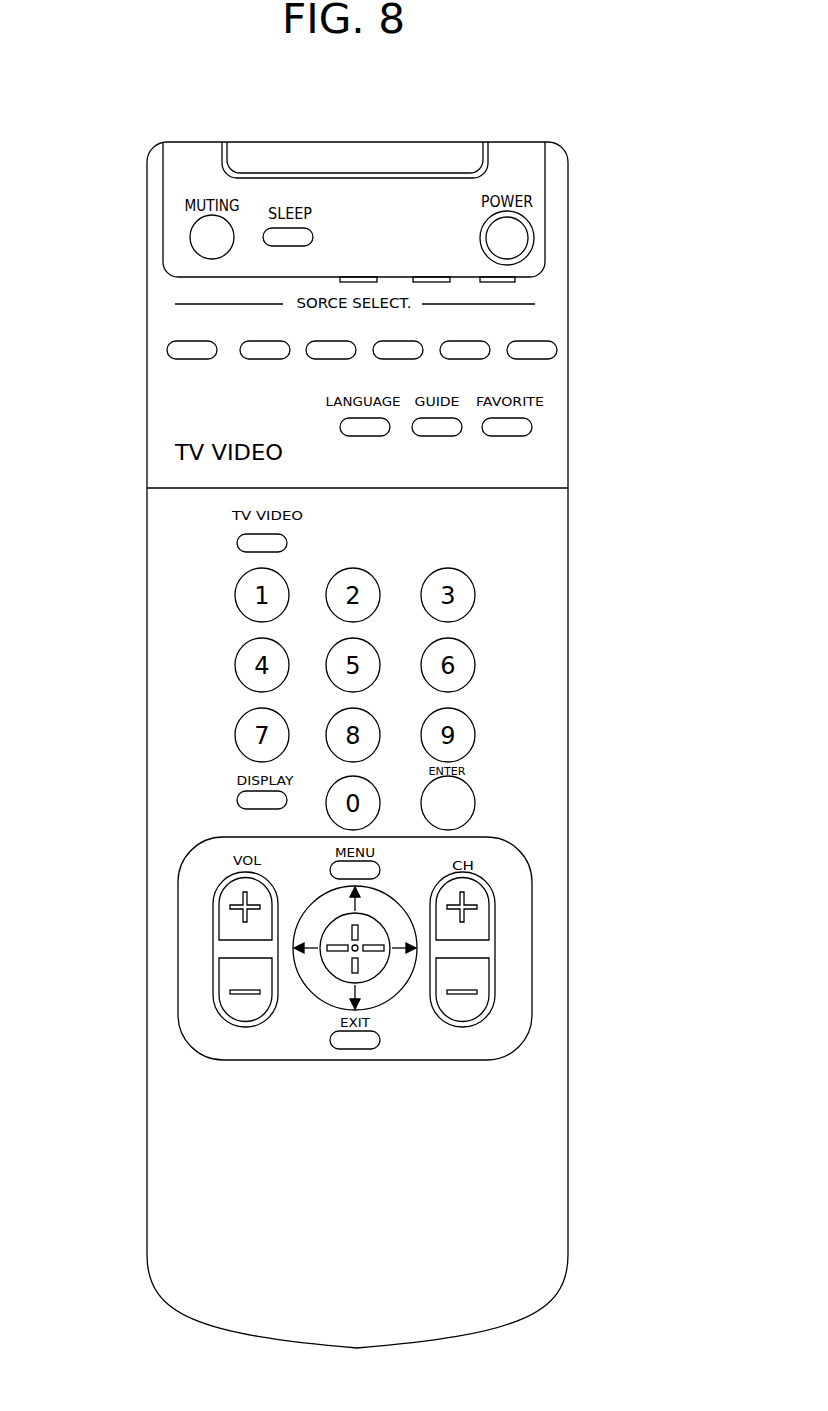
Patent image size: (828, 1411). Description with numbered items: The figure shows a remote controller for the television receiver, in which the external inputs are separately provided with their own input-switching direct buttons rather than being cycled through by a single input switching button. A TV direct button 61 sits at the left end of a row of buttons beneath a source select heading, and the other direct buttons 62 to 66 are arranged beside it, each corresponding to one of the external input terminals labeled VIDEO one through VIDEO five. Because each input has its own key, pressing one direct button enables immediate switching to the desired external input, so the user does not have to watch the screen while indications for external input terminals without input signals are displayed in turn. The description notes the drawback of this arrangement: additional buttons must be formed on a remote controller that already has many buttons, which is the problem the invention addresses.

The TV direct button 61 is at (168, 355).
The direct button 62 is at (266, 341).
The direct button 63 is at (328, 341).
The direct button 64 is at (400, 342).
The direct button 65 is at (466, 342).
The direct button 66 is at (557, 350).